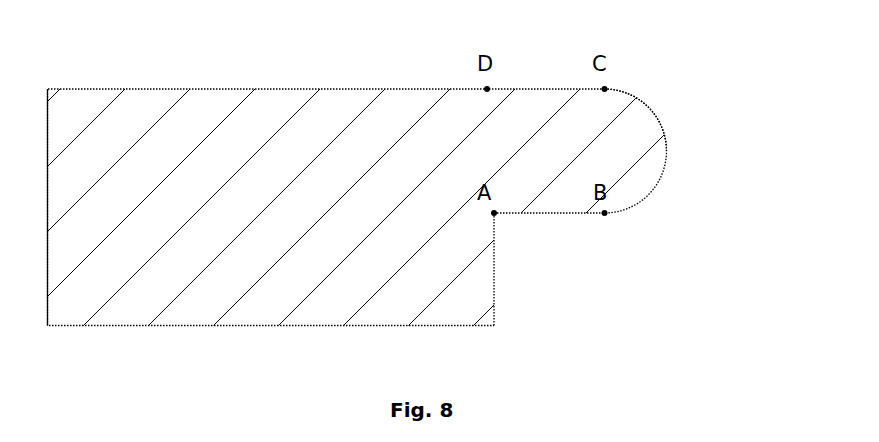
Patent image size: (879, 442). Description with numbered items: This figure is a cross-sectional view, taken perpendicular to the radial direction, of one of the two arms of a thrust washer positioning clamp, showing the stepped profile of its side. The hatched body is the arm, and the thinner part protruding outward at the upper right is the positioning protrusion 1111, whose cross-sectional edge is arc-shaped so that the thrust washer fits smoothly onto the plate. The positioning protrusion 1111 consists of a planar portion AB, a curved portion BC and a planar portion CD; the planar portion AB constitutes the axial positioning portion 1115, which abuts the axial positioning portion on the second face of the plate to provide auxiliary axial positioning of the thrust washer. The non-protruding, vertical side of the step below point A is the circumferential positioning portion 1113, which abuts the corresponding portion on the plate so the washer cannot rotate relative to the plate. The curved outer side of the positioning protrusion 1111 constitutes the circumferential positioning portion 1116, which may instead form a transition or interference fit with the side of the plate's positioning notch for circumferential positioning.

The positioning protrusion 1111 is at (589, 150).
The circumferential positioning portion 1113 is at (495, 282).
The axial positioning portion 1115 is at (559, 213).
The circumferential positioning portion 1116 is at (660, 147).